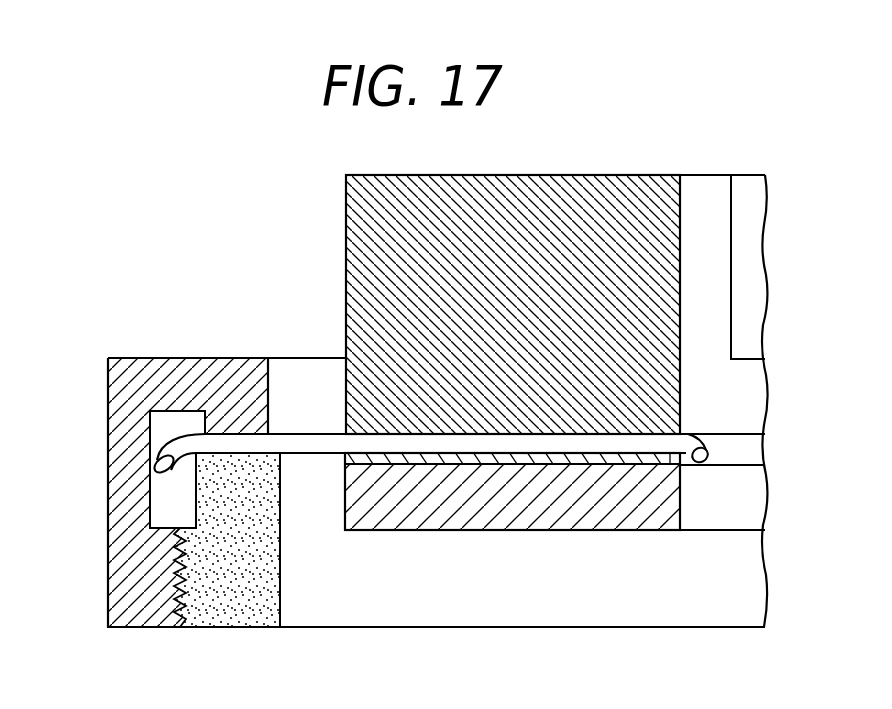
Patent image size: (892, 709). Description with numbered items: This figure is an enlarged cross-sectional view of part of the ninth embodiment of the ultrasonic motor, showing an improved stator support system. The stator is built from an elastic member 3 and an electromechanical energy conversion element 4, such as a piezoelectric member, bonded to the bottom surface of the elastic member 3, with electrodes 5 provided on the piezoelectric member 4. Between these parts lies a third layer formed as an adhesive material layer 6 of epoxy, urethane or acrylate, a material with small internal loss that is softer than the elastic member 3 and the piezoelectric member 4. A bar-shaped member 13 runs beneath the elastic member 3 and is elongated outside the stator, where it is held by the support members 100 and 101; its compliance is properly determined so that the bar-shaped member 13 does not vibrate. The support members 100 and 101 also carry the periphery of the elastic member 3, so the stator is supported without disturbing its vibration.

The elastic member 3 is at (358, 274).
The electromechanical energy conversion element 4 is at (428, 505).
The electrodes 5 is at (585, 466).
The adhesive material layer 6 is at (670, 466).
The bar-shaped member 13 is at (706, 443).
The support member 100 is at (172, 367).
The support member 101 is at (217, 603).